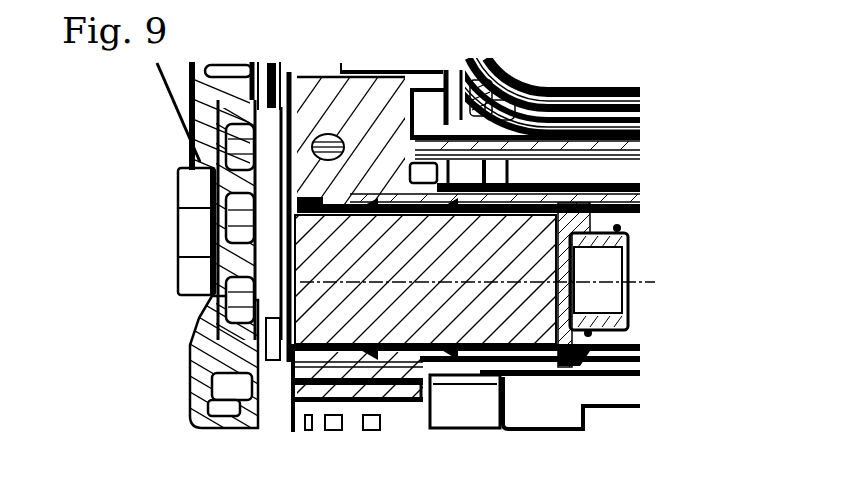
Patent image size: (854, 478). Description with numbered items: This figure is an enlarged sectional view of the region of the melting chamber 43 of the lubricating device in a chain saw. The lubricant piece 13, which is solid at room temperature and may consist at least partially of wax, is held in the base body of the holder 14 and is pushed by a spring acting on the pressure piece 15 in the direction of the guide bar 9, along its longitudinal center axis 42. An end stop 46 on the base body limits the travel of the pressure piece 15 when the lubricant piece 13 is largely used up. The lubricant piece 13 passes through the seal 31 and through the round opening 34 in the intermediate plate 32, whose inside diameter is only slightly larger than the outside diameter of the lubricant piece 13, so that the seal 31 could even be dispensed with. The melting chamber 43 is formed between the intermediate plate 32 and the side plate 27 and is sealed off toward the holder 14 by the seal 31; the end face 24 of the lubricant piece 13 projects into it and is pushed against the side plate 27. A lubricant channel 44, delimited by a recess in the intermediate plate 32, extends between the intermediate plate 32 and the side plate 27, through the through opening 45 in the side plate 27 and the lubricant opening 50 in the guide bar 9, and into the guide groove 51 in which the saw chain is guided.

The guide bar 9 is at (272, 270).
The lubricant piece 13 is at (382, 297).
The holder 14 is at (627, 333).
The pressure piece 15 is at (573, 353).
The end face 24 is at (292, 317).
The side plate 27 is at (293, 305).
The seal 31 is at (322, 357).
The intermediate plate 32 is at (293, 106).
The opening 34 is at (295, 228).
The longitudinal center axis 42 is at (500, 280).
The melting chamber 43 is at (293, 353).
The lubricant channel 44 is at (288, 173).
The through opening 45 is at (287, 104).
The end stop 46 is at (438, 350).
The lubricant opening 50 is at (283, 107).
The guide groove 51 is at (273, 78).